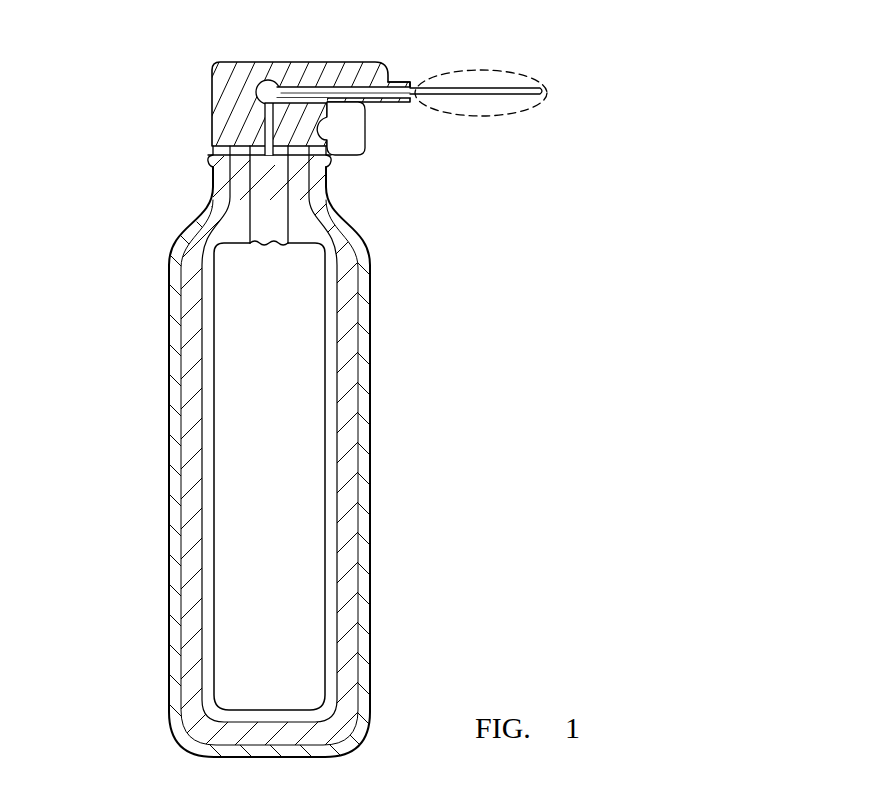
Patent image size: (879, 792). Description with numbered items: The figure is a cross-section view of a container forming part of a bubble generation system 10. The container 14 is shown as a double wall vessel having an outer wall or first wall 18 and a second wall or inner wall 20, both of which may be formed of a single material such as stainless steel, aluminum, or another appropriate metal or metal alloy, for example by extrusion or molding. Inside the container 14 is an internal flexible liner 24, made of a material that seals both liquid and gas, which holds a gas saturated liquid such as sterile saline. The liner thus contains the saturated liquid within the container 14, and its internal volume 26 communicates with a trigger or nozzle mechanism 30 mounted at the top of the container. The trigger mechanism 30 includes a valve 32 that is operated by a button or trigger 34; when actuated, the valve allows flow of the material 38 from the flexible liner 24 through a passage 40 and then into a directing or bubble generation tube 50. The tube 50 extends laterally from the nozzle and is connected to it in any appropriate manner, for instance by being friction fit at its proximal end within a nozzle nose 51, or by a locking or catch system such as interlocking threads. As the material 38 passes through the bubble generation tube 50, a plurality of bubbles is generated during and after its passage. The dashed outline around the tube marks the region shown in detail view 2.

The bubble generation system 10 is at (157, 107).
The container 14 is at (373, 502).
The outer wall 18 is at (347, 228).
The inner wall 20 is at (342, 253).
The flexible liner 24 is at (325, 327).
The internal volume 26 is at (272, 198).
The trigger mechanism 30 is at (307, 92).
The valve 32 is at (257, 96).
The trigger 34 is at (353, 132).
The material 38 is at (294, 394).
The passage 40 is at (337, 87).
The bubble generation tube 50 is at (477, 97).
The nozzle nose 51 is at (408, 88).
The detail view indicator FIG. 2 is at (528, 80).